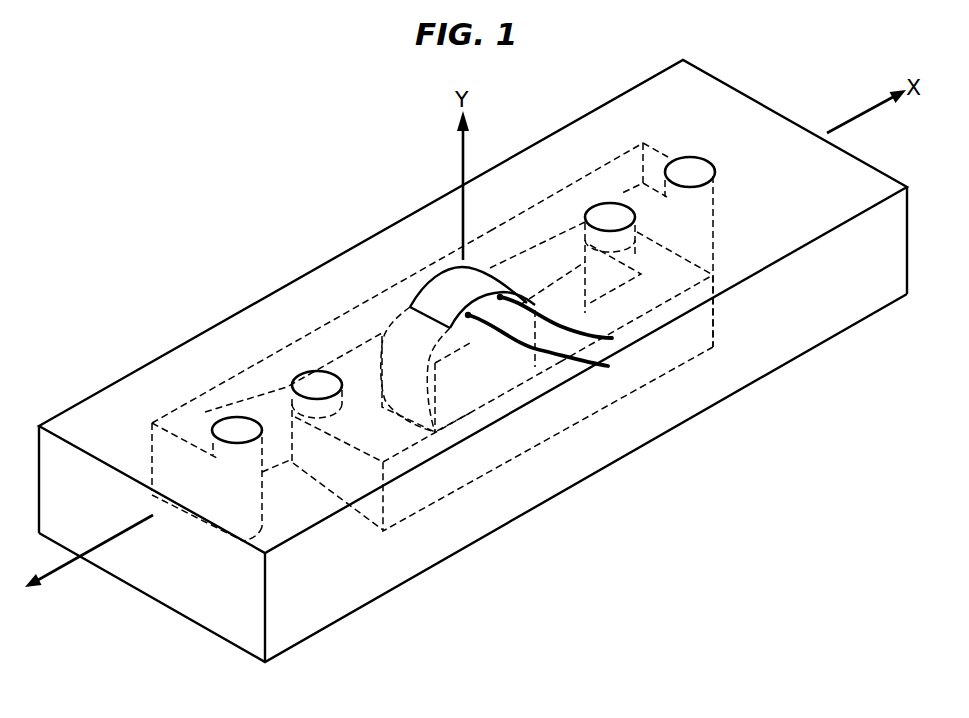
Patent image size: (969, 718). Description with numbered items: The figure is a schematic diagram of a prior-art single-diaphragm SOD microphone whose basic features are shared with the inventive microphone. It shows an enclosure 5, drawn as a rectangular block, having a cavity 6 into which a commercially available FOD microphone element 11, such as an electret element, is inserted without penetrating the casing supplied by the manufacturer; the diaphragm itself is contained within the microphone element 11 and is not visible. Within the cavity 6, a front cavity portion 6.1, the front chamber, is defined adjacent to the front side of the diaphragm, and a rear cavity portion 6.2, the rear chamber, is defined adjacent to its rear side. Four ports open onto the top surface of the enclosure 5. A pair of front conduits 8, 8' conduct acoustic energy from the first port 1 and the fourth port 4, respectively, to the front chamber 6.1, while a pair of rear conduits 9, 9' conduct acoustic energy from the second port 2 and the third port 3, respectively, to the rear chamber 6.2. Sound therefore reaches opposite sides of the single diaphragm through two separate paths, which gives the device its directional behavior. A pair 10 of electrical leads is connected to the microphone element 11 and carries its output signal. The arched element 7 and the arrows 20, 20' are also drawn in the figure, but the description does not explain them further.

The first port 1 is at (218, 431).
The second port 2 is at (294, 385).
The third port 3 is at (590, 217).
The fourth port 4 is at (702, 168).
The enclosure 5 is at (343, 578).
The cavity 6 is at (445, 306).
The front cavity portion 6.1 is at (393, 328).
The rear cavity portion 6.2 is at (553, 333).
The curved outer surface 7 is at (510, 290).
The front conduit 8 is at (321, 327).
The front conduit 8' is at (566, 187).
The rear conduit 9 is at (471, 423).
The rear conduit 9' is at (636, 318).
The pair of electrical leads 10 is at (595, 360).
The FOD microphone element 11 is at (473, 280).
The incoming direction arrow 20 is at (382, 231).
The outgoing direction arrow 20' is at (601, 415).